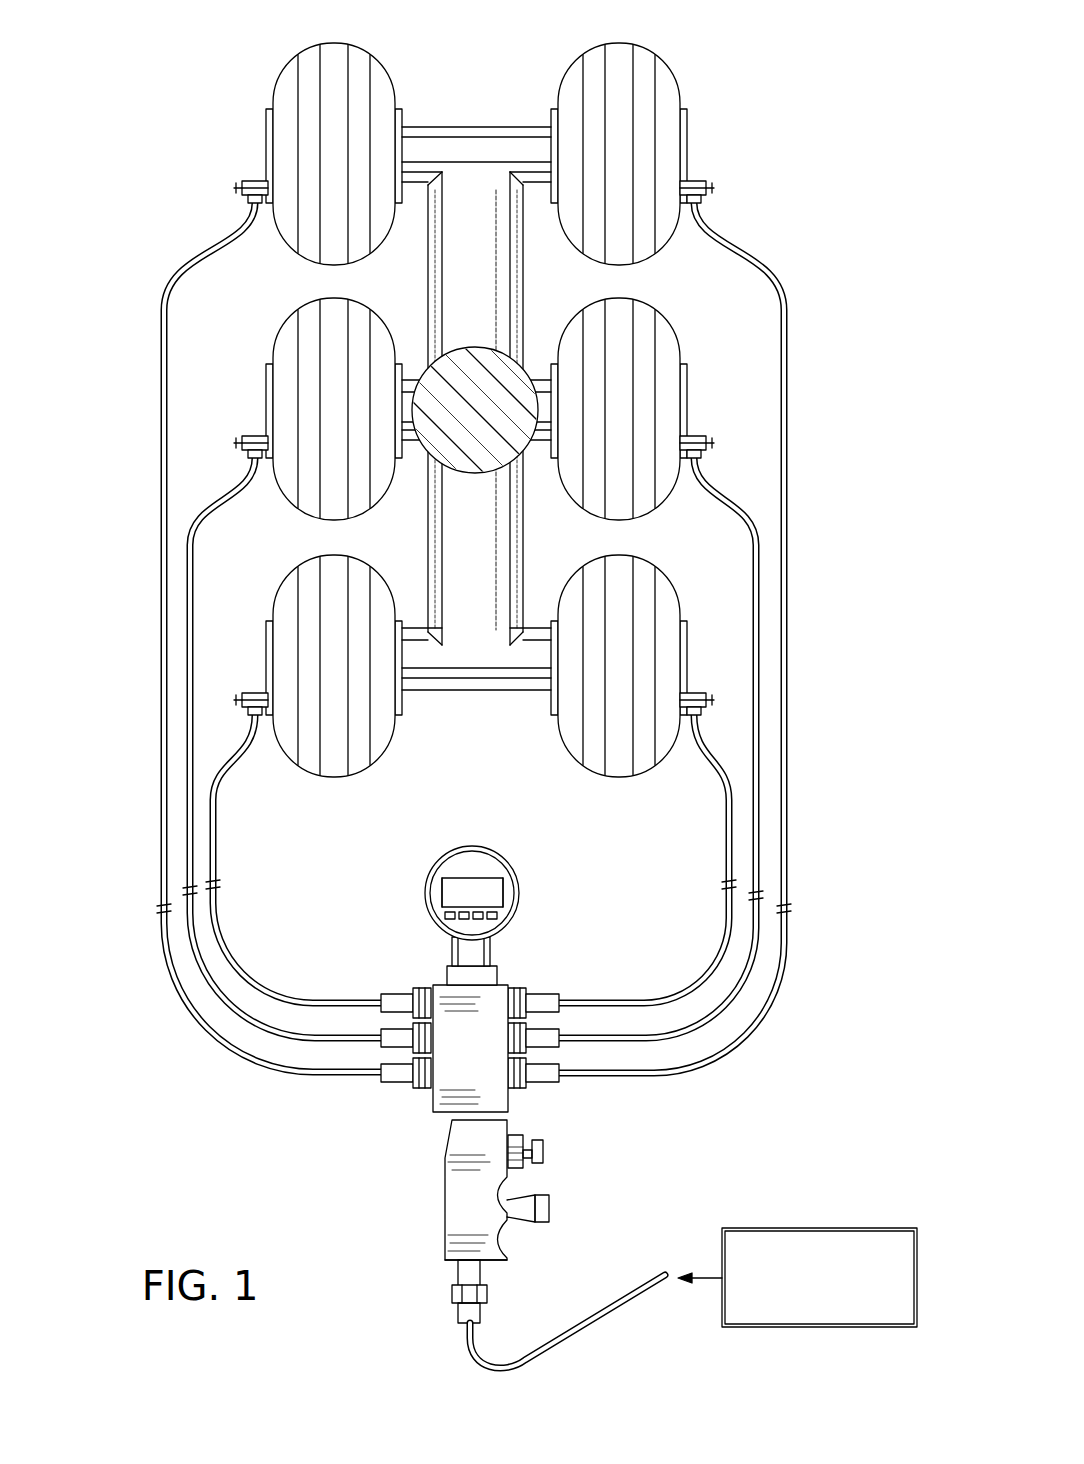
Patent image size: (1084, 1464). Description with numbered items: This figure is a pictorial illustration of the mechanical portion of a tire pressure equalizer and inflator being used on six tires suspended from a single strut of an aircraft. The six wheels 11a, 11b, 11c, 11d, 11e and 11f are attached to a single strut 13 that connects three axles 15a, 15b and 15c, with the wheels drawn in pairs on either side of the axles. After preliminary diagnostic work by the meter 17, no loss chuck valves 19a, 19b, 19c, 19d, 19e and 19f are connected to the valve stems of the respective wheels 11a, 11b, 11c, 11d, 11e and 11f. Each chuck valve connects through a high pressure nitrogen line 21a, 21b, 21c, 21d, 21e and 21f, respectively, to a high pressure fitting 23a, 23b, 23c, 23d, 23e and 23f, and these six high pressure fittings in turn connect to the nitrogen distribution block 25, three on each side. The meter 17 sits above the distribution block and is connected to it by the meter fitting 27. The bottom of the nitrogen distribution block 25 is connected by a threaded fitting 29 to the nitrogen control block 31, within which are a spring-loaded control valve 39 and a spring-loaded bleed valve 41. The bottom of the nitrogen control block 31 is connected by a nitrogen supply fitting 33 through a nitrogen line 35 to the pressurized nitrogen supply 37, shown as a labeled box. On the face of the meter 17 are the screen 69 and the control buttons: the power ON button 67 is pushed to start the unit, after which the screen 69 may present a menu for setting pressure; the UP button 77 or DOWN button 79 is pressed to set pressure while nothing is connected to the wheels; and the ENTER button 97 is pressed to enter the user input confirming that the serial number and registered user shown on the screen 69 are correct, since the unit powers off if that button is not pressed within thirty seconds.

The wheel 11a is at (678, 85).
The wheel 11b is at (678, 338).
The wheel 11c is at (672, 585).
The wheel 11d is at (282, 75).
The wheel 11e is at (285, 335).
The wheel 11f is at (288, 585).
The strut 13 is at (505, 362).
The axle 15a is at (510, 126).
The axle 15b is at (535, 455).
The axle 15c is at (530, 690).
The meter 17 is at (497, 856).
The no loss chuck valve 19a is at (700, 181).
The no loss chuck valve 19b is at (700, 436).
The no loss chuck valve 19c is at (700, 693).
The no loss chuck valve 19d is at (248, 181).
The no loss chuck valve 19e is at (250, 436).
The no loss chuck valve 19f is at (250, 693).
The high pressure nitrogen line 21a is at (743, 1030).
The high pressure nitrogen line 21b is at (740, 968).
The high pressure nitrogen line 21c is at (727, 918).
The high pressure nitrogen line 21d is at (208, 1030).
The high pressure nitrogen line 21e is at (212, 977).
The high pressure nitrogen line 21f is at (218, 925).
The high pressure fitting 23a is at (525, 1085).
The high pressure fitting 23b is at (558, 1047).
The high pressure fitting 23c is at (555, 994).
The high pressure fitting 23d is at (395, 1082).
The high pressure fitting 23e is at (378, 1047).
The high pressure fitting 23f is at (395, 994).
The nitrogen distribution block 25 is at (435, 1112).
The meter fitting 27 is at (490, 952).
The threaded fitting 29 is at (470, 1133).
The nitrogen control block 31 is at (445, 1235).
The nitrogen supply fitting 33 is at (455, 1293).
The nitrogen line 35 is at (612, 1302).
The pressurized nitrogen supply 37 is at (835, 1227).
The spring-loaded control valve 39 is at (550, 1215).
The spring-loaded bleed valve 41 is at (545, 1155).
The power ON button 67 is at (512, 906).
The screen 69 is at (470, 878).
The UP button 77 is at (478, 905).
The DOWN button 79 is at (445, 890).
The ENTER button 97 is at (442, 908).